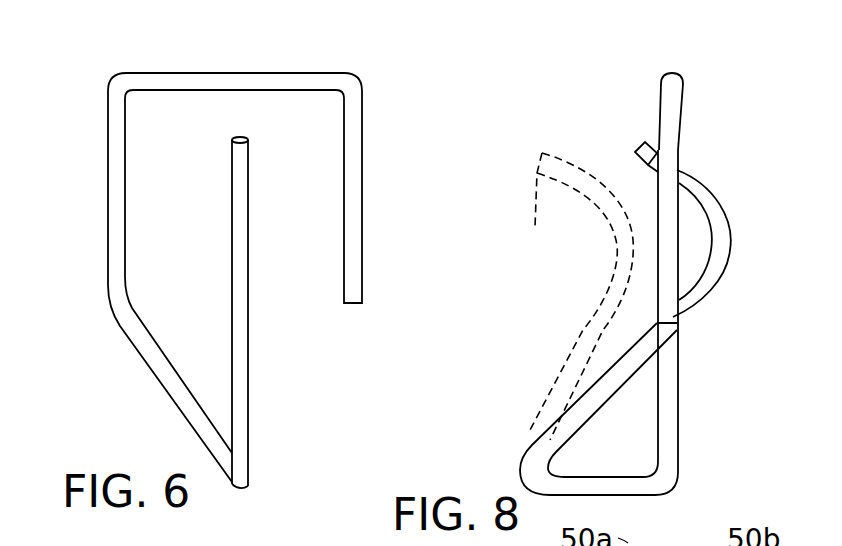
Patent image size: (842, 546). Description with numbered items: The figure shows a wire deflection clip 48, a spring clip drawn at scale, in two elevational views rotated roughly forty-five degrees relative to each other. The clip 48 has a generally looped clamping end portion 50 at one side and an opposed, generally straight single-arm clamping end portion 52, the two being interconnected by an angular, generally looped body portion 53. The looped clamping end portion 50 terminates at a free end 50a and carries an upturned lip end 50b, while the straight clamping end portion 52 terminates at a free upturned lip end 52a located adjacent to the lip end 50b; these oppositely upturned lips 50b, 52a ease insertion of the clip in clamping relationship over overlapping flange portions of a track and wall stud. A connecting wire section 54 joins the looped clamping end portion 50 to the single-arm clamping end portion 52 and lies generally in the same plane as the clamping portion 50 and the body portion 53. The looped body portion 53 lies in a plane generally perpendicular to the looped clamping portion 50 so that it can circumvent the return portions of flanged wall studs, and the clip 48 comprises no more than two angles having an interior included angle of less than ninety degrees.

In FIG. 8, the wire deflection clip 48 is at (692, 68).
In FIG. 6, the looped clamping end portion 50 is at (262, 67).
In FIG. 8, the looped clamping end portion 50 is at (661, 67).
In FIG. 6, the free end 50a is at (202, 78).
In FIG. 8, the free end 50a is at (670, 312).
In FIG. 6, the upturned lip end 50b is at (352, 103).
In FIG. 8, the upturned lip end 50b is at (683, 95).
In FIG. 6, the straight clamping end portion 52 is at (236, 286).
In FIG. 8, the straight clamping end portion 52 is at (730, 250).
In FIG. 6, the free upturned lip end 52a is at (237, 137).
In FIG. 8, the free upturned lip end 52a is at (645, 148).
In FIG. 6, the looped body portion 53 is at (247, 488).
In FIG. 8, the looped body portion 53 is at (610, 477).
In FIG. 6, the connecting wire section 54 is at (172, 384).
In FIG. 8, the connecting wire section 54 is at (668, 412).